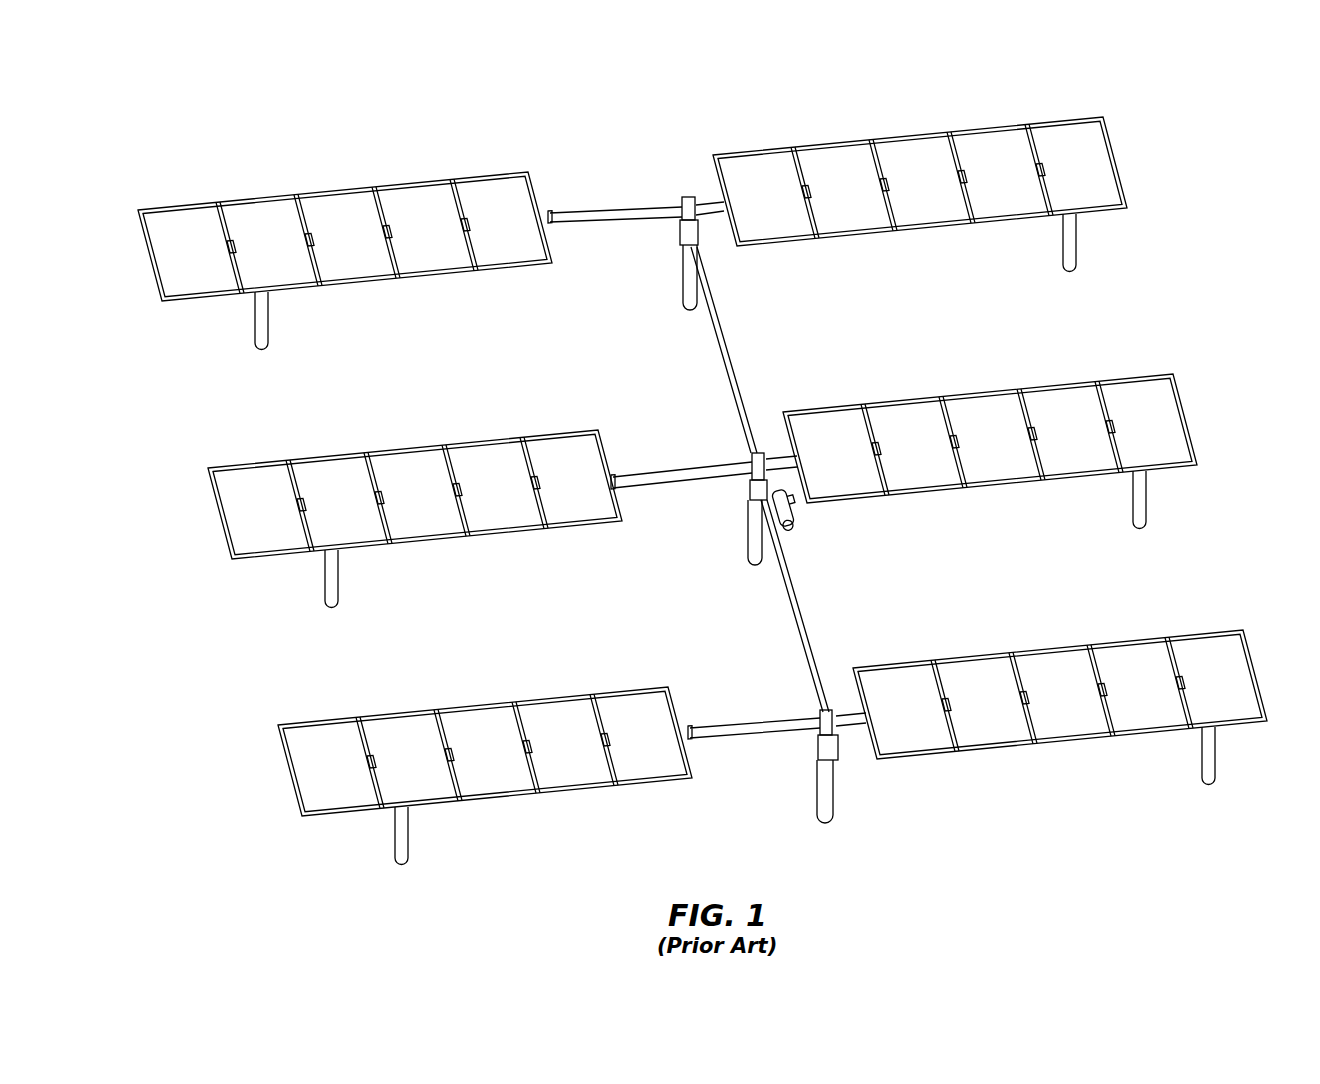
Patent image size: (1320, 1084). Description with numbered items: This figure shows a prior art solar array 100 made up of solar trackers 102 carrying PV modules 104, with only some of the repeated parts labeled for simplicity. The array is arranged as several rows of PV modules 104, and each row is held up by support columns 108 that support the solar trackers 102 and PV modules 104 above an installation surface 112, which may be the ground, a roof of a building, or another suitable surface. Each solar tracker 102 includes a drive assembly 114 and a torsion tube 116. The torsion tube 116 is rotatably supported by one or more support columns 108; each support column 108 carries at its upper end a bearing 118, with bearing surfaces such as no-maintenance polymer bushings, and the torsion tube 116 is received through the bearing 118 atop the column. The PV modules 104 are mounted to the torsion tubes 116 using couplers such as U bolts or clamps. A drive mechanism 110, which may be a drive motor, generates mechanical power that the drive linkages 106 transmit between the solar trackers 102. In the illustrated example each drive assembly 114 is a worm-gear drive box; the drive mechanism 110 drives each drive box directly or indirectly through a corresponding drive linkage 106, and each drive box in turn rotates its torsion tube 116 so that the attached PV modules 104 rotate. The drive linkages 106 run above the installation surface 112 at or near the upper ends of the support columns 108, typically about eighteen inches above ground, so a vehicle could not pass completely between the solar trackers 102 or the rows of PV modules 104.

The solar array 100 is at (208, 86).
The solar tracker 102 is at (720, 479).
The PV module 104 is at (364, 246).
The drive linkage 106 is at (773, 572).
The support column 108 is at (1078, 250).
The drive mechanism 110 is at (790, 520).
The installation surface 112 is at (434, 626).
The drive assembly 114 is at (677, 228).
The torsion tube 116 is at (618, 212).
The bearing 118 is at (688, 195).